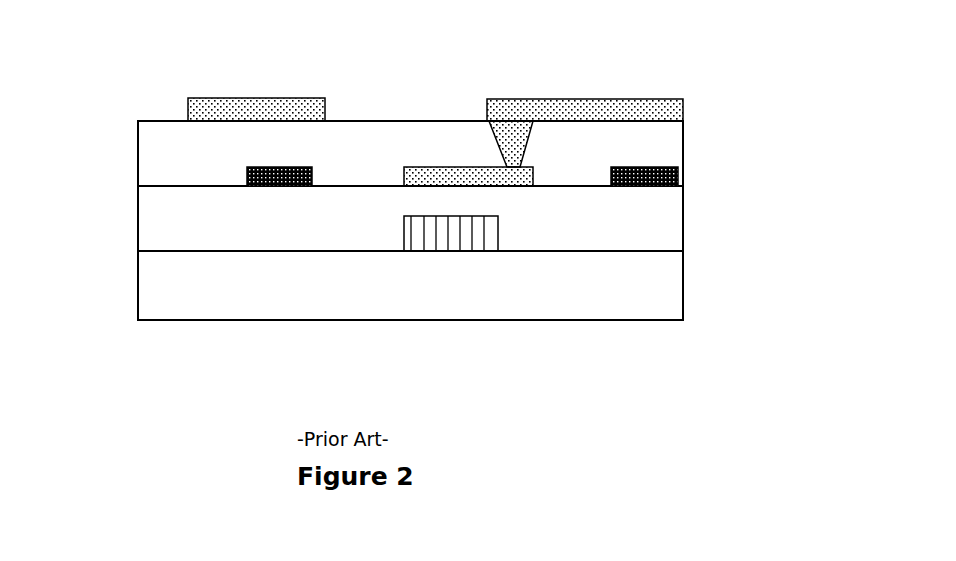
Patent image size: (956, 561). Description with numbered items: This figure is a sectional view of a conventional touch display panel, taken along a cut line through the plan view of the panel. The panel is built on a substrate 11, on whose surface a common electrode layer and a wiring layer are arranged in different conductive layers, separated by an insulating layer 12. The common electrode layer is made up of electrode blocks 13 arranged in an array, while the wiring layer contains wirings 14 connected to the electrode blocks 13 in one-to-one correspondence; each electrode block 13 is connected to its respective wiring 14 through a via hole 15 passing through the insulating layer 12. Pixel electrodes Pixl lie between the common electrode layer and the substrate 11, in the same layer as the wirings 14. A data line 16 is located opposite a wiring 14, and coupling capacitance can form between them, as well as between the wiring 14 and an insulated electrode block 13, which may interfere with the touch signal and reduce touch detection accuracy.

The substrate 11 is at (422, 303).
The insulating layer 12 is at (168, 132).
The electrode block 13 is at (231, 111).
The wiring 14 is at (430, 184).
The via hole 15 is at (514, 143).
The data line 16 is at (411, 243).
The pixel electrode Pixl is at (296, 167).